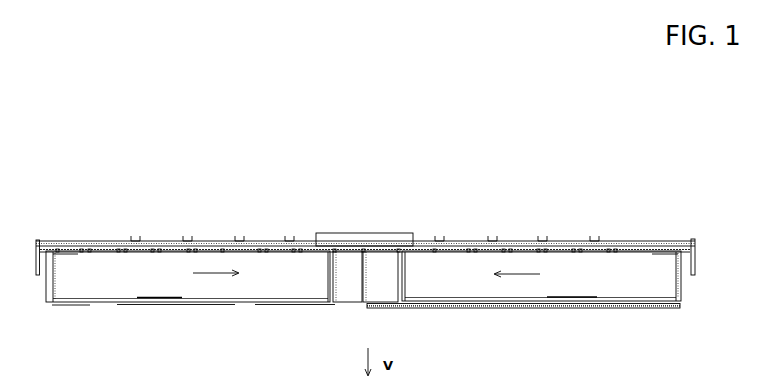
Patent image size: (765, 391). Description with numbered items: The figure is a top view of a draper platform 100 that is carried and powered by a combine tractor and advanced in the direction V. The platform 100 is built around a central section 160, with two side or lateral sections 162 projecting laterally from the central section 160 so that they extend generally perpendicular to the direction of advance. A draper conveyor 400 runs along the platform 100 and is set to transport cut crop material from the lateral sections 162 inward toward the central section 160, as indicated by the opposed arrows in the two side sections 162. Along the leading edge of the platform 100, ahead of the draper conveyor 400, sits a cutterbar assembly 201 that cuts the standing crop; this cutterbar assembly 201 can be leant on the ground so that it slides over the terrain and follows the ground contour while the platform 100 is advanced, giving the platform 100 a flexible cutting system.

The platform 100 is at (443, 213).
The draper conveyor 400 is at (173, 258).
The lateral sections 162 is at (132, 295).
The central section 160 is at (347, 297).
The cutterbar assembly 201 is at (623, 313).